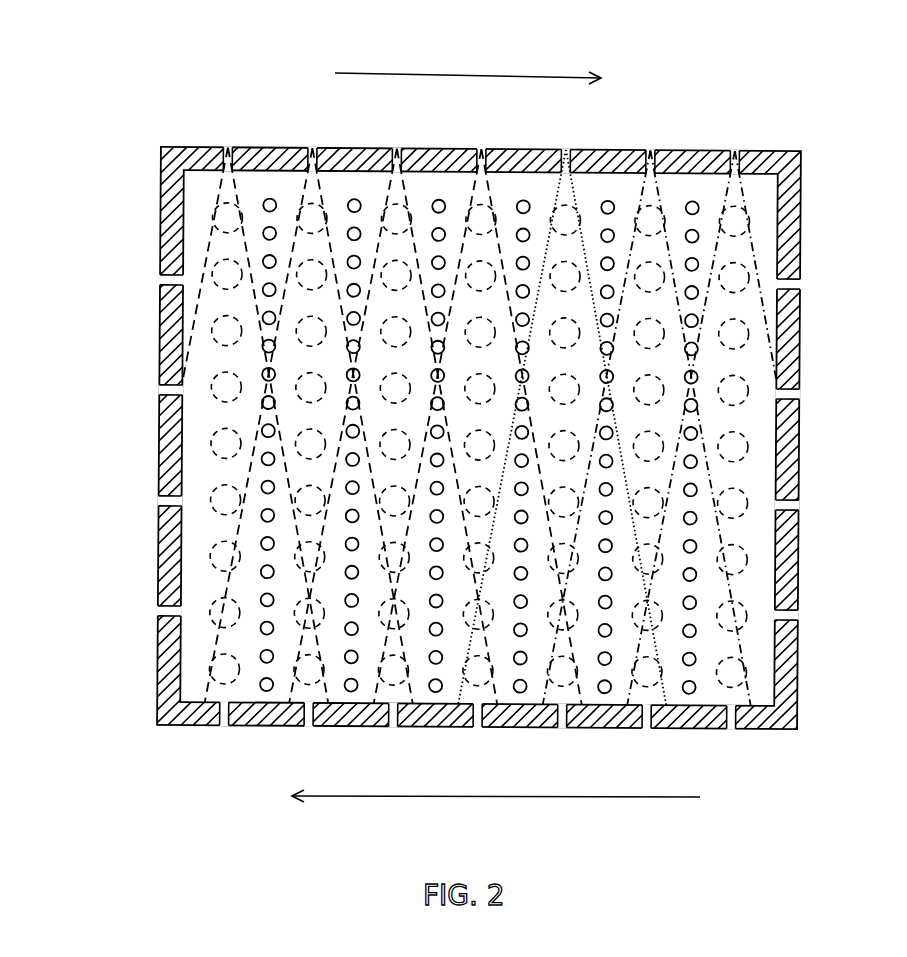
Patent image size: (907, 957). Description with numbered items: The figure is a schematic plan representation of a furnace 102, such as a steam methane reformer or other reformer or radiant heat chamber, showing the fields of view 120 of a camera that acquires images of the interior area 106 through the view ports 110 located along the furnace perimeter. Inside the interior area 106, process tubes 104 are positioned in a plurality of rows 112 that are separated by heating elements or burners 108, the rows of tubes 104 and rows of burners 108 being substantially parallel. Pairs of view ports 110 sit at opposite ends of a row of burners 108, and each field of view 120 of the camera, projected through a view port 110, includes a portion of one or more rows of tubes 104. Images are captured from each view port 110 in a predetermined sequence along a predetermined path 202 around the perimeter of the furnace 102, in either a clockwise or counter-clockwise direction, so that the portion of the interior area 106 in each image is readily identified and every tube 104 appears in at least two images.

The furnace 102 is at (453, 393).
The process tubes 104 is at (263, 373).
The interior area 106 is at (200, 642).
The burners 108 is at (743, 213).
The view ports 110 is at (229, 148).
The rows 112 is at (482, 442).
The fields of view 120 is at (496, 247).
The predetermined path 202 is at (487, 73).